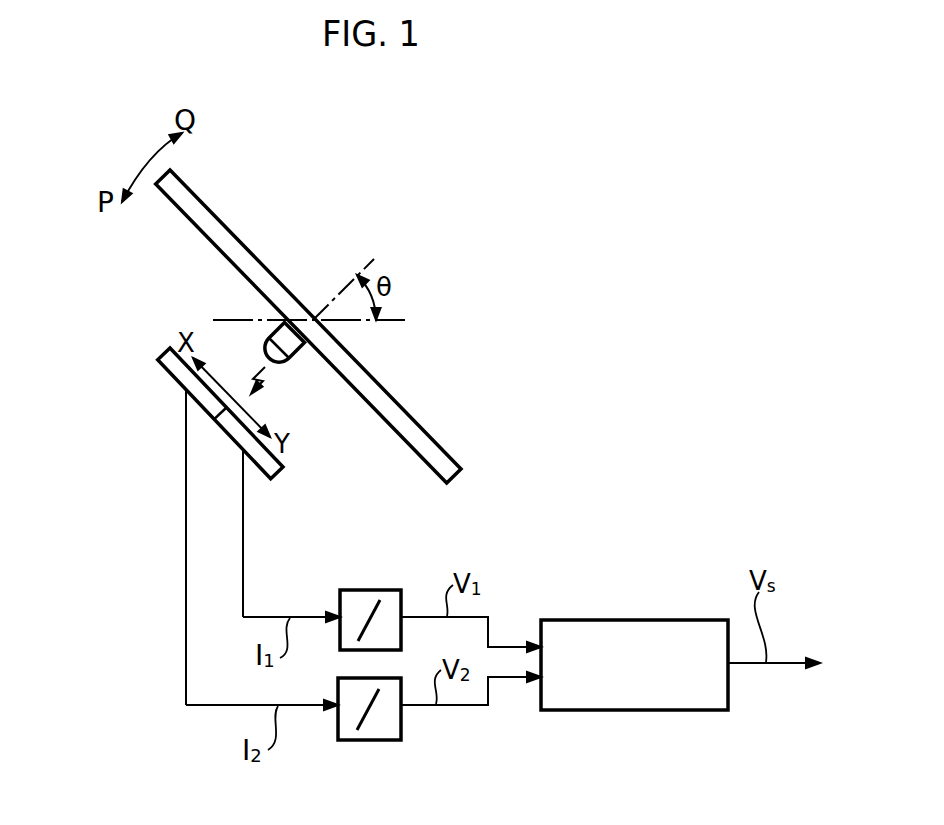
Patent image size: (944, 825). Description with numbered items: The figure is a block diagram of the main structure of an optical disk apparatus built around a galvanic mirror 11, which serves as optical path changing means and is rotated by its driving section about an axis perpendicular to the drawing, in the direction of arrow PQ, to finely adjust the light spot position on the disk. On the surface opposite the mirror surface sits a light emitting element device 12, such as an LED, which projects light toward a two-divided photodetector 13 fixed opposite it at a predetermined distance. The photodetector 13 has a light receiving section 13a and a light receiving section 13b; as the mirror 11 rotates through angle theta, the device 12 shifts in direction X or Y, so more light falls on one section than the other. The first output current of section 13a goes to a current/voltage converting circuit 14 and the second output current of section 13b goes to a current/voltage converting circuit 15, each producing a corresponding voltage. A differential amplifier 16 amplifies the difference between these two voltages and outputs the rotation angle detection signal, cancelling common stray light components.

The galvanic mirror 11 is at (447, 452).
The light emitting element device 12 is at (303, 362).
The two-divided photodetector 13 is at (204, 526).
The light receiving section 13a is at (260, 472).
The light receiving section 13b is at (188, 398).
The current/voltage converting circuit 14 is at (372, 590).
The current/voltage converting circuit 15 is at (370, 740).
The differential amplifier 16 is at (628, 620).